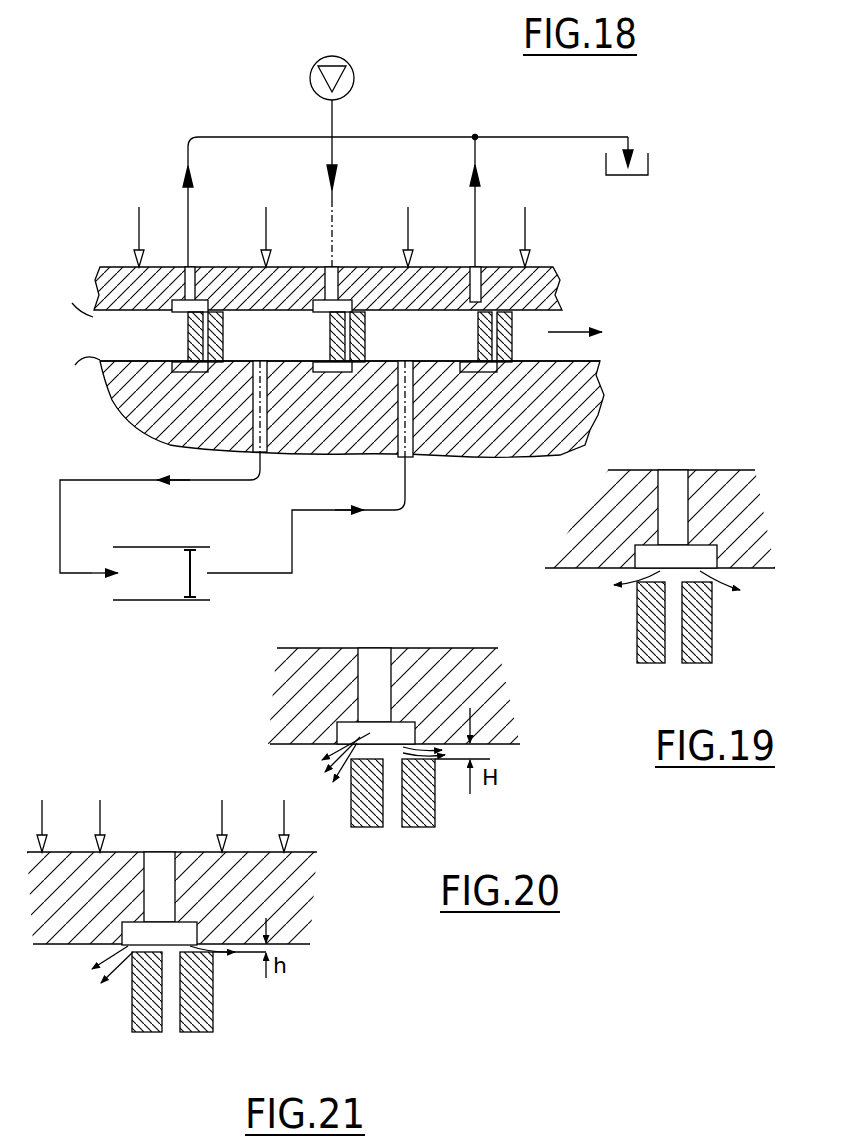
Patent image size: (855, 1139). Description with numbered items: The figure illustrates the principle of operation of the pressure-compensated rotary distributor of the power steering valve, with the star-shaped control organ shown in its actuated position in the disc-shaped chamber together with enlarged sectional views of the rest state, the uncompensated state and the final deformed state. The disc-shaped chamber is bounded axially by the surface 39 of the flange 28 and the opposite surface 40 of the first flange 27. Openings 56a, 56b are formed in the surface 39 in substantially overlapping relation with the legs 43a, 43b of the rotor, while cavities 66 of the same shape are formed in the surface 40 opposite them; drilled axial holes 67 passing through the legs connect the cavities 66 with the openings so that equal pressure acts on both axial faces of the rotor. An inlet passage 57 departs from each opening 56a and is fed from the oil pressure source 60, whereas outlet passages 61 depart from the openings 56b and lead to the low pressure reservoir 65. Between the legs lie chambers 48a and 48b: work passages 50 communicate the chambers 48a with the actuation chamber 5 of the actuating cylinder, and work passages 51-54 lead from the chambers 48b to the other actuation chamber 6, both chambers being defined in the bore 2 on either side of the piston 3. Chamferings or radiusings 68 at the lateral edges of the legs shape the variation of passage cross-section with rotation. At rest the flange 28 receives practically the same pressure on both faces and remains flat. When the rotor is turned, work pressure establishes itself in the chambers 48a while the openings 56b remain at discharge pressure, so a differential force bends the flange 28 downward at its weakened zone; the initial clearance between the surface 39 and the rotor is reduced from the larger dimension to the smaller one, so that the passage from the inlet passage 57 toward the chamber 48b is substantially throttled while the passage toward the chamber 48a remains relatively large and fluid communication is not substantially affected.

In FIG. 18, the oil pressure source 60 is at (354, 80).
In FIG. 18, the reservoir 65 is at (650, 167).
In FIG. 18, the outlet passages 61 is at (192, 268).
In FIG. 18, the inlet passage 57 is at (339, 272).
In FIG. 19, the inlet passage 57 is at (682, 494).
In FIG. 20, the inlet passage 57 is at (365, 663).
In FIG. 21, the inlet passage 57 is at (163, 866).
In FIG. 18, the flange 28 is at (547, 291).
In FIG. 19, the flange 28 is at (639, 483).
In FIG. 20, the flange 28 is at (425, 668).
In FIG. 21, the flange 28 is at (116, 866).
In FIG. 18, the first flange 27 is at (616, 371).
In FIG. 18, the surface 39 is at (71, 303).
In FIG. 18, the surface 40 is at (78, 373).
In FIG. 18, the openings 56a is at (322, 312).
In FIG. 19, the openings 56a is at (707, 555).
In FIG. 20, the openings 56a is at (417, 728).
In FIG. 21, the openings 56a is at (188, 934).
In FIG. 18, the openings 56b is at (177, 313).
In FIG. 18, the drilled axial holes 67 is at (209, 335).
In FIG. 19, the drilled axial holes 67 is at (673, 661).
In FIG. 20, the drilled axial holes 67 is at (393, 818).
In FIG. 21, the drilled axial holes 67 is at (168, 1015).
In FIG. 18, the legs 43a is at (360, 336).
In FIG. 19, the legs 43a is at (700, 638).
In FIG. 20, the legs 43a is at (435, 812).
In FIG. 21, the legs 43a is at (202, 1007).
In FIG. 18, the legs 43b is at (502, 328).
In FIG. 18, the chambers 48a is at (270, 349).
In FIG. 19, the chambers 48a is at (660, 594).
In FIG. 20, the chambers 48a is at (376, 774).
In FIG. 21, the chambers 48a is at (156, 980).
In FIG. 18, the chambers 48b is at (456, 342).
In FIG. 19, the chambers 48b is at (756, 669).
In FIG. 21, the chambers 48b is at (248, 1042).
In FIG. 18, the chamferings or radiusings 68 is at (508, 368).
In FIG. 18, the work passages 50 is at (263, 452).
In FIG. 18, the cavities 66 is at (337, 373).
In FIG. 18, the work passages and connecting passages 51-54 is at (412, 455).
In FIG. 18, the bore 2 is at (157, 546).
In FIG. 18, the piston 3 is at (187, 582).
In FIG. 18, the actuation chamber 5 is at (144, 587).
In FIG. 18, the actuation chamber 6 is at (204, 575).